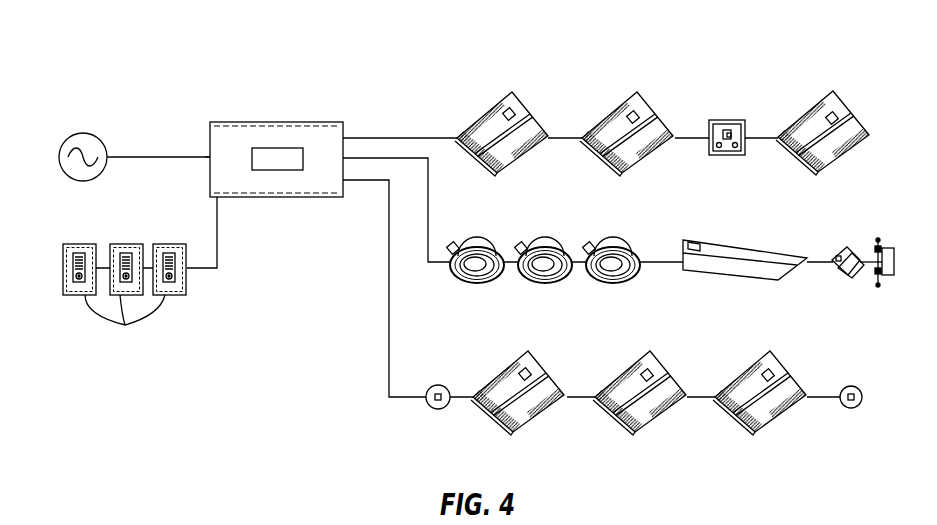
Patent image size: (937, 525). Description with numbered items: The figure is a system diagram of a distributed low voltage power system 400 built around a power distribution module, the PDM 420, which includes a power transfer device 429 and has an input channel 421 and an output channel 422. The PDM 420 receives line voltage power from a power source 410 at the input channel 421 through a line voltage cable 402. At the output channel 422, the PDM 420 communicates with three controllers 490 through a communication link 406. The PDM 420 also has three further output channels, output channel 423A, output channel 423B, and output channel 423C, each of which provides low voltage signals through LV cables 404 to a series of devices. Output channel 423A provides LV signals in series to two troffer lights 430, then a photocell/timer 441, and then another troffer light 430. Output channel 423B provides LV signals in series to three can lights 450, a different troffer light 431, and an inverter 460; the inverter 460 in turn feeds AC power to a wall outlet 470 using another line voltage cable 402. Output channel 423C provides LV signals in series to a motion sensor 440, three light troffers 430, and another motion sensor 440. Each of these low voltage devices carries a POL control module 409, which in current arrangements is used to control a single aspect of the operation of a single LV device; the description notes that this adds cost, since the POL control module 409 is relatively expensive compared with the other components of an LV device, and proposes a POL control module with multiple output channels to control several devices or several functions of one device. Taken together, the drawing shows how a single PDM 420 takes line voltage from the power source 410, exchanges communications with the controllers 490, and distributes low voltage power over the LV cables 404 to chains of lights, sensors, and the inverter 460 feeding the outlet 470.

The system 400 is at (100, 45).
The line voltage cable 402 is at (147, 157).
The LV cable 404 is at (413, 137).
The communication link 406 is at (105, 268).
The POL control module 409 is at (508, 112).
The power source 410 is at (80, 134).
The PDM 420 is at (232, 115).
The input channel 421 is at (210, 157).
The output channel 422 is at (220, 199).
The output channel 423A is at (353, 137).
The output channel 423B is at (345, 158).
The output channel 423C is at (343, 181).
The power transfer device 429 is at (263, 152).
The troffer light 430 is at (514, 109).
The troffer light 431 is at (718, 240).
The motion sensor 440 is at (438, 410).
The photocell/timer 441 is at (728, 155).
The can light 450 is at (473, 255).
The inverter 460 is at (848, 253).
The wall outlet 470 is at (882, 286).
The controller 490 is at (124, 299).